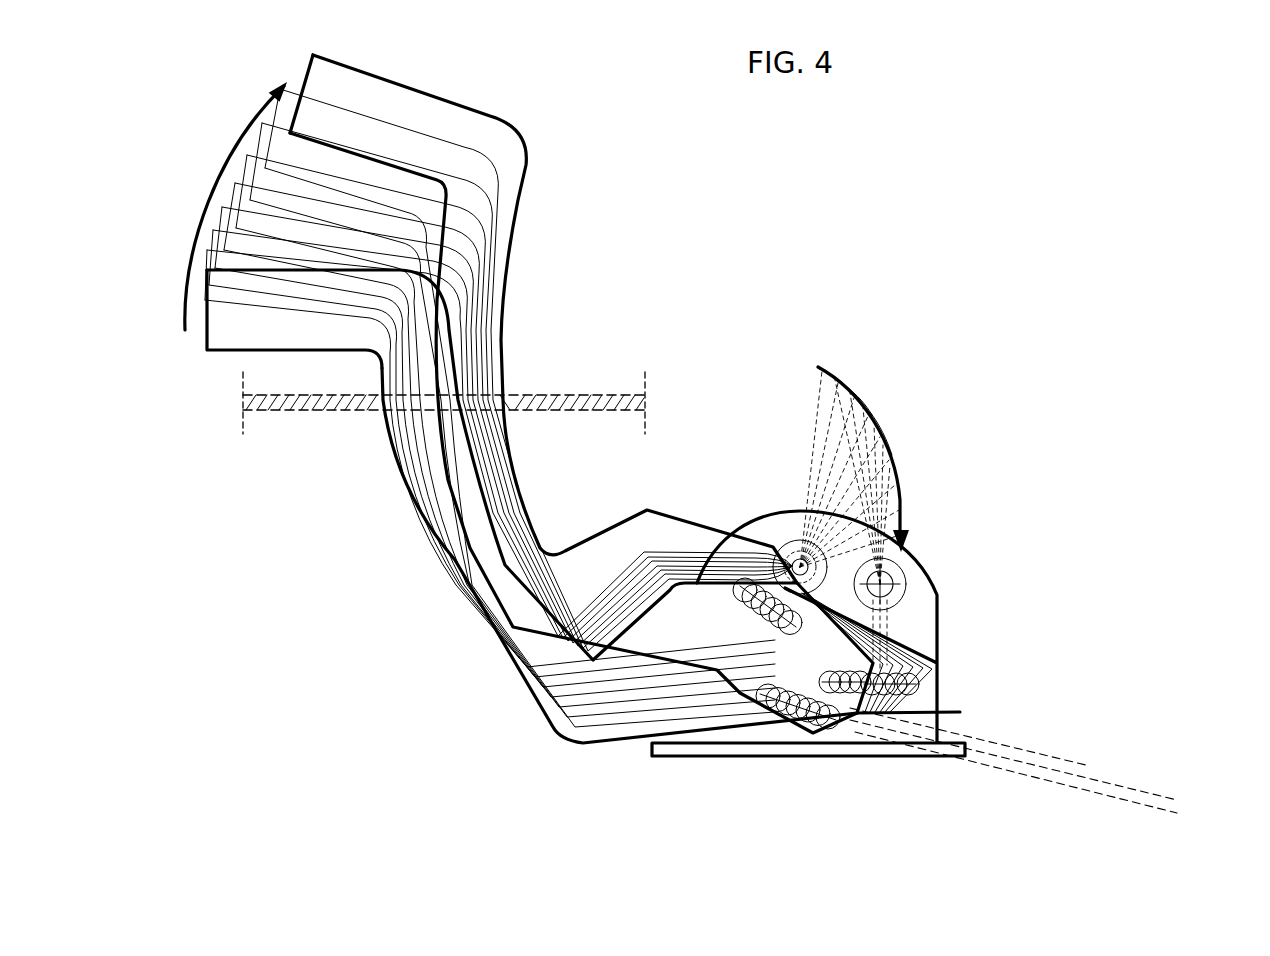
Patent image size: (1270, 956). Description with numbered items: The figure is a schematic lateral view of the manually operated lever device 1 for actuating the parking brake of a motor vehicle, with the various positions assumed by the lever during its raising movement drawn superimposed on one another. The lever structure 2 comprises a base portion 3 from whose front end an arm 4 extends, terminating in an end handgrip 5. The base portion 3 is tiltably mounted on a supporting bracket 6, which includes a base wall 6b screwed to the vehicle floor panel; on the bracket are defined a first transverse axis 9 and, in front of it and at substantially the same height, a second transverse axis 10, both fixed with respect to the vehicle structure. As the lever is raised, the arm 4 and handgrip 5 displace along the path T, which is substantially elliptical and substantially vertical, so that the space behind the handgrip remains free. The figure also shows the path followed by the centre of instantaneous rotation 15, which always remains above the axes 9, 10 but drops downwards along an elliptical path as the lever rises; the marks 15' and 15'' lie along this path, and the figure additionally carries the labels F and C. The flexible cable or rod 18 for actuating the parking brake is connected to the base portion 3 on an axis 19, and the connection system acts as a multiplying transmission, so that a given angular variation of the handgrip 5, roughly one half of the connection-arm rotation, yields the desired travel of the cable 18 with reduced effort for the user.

The lever device 1 is at (1013, 249).
The lever structure 2 is at (474, 641).
The base portion 3 is at (673, 620).
The arm 4 is at (442, 552).
The end handgrip 5 is at (237, 340).
The supporting bracket 6 is at (746, 516).
The base wall 6b is at (716, 750).
The first transverse axis 9 is at (910, 592).
The second transverse axis 10 is at (792, 548).
The axis of instantaneous rotation 15 is at (868, 453).
The arc position 15' is at (871, 380).
The arc position 15'' is at (903, 422).
The flexible cable or rod 18 is at (1030, 745).
The axis 19 is at (748, 670).
The path T is at (208, 202).
The force F is at (512, 398).
The clamping zone C is at (324, 420).